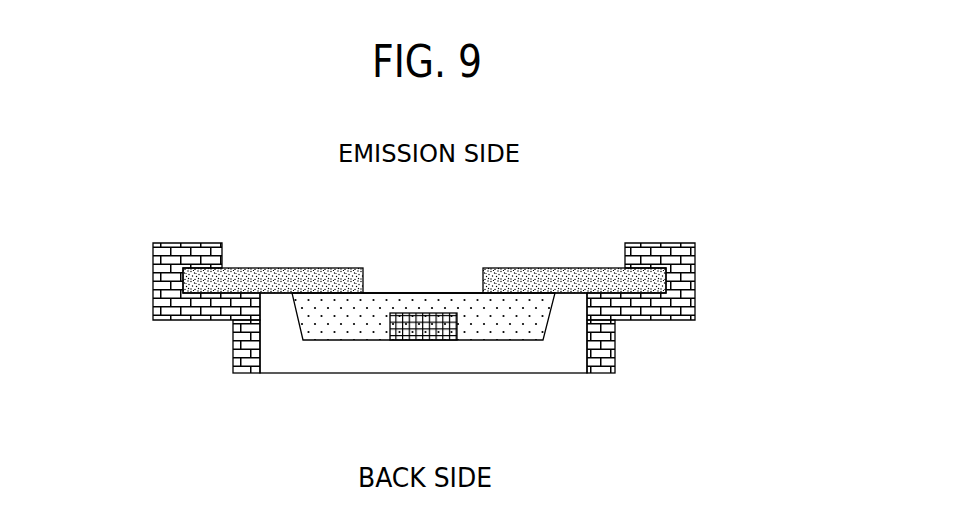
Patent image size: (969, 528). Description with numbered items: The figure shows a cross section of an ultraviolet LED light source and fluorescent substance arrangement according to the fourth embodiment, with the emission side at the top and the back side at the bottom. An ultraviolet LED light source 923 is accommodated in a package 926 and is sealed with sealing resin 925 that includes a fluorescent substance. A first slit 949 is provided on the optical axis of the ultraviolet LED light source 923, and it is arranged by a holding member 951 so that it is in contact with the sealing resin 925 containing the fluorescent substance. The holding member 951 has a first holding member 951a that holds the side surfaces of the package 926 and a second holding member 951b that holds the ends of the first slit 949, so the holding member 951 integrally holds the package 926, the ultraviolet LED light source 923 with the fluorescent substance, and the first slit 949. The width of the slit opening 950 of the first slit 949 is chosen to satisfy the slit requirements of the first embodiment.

The ultraviolet LED light source 923 is at (412, 340).
The sealing resin 925 is at (489, 338).
The package 926 is at (570, 362).
The first slit 949 is at (343, 268).
The slit opening 950 is at (425, 287).
The holding member 951 is at (695, 278).
The first holding member 951a is at (233, 340).
The second holding member 951b is at (155, 277).